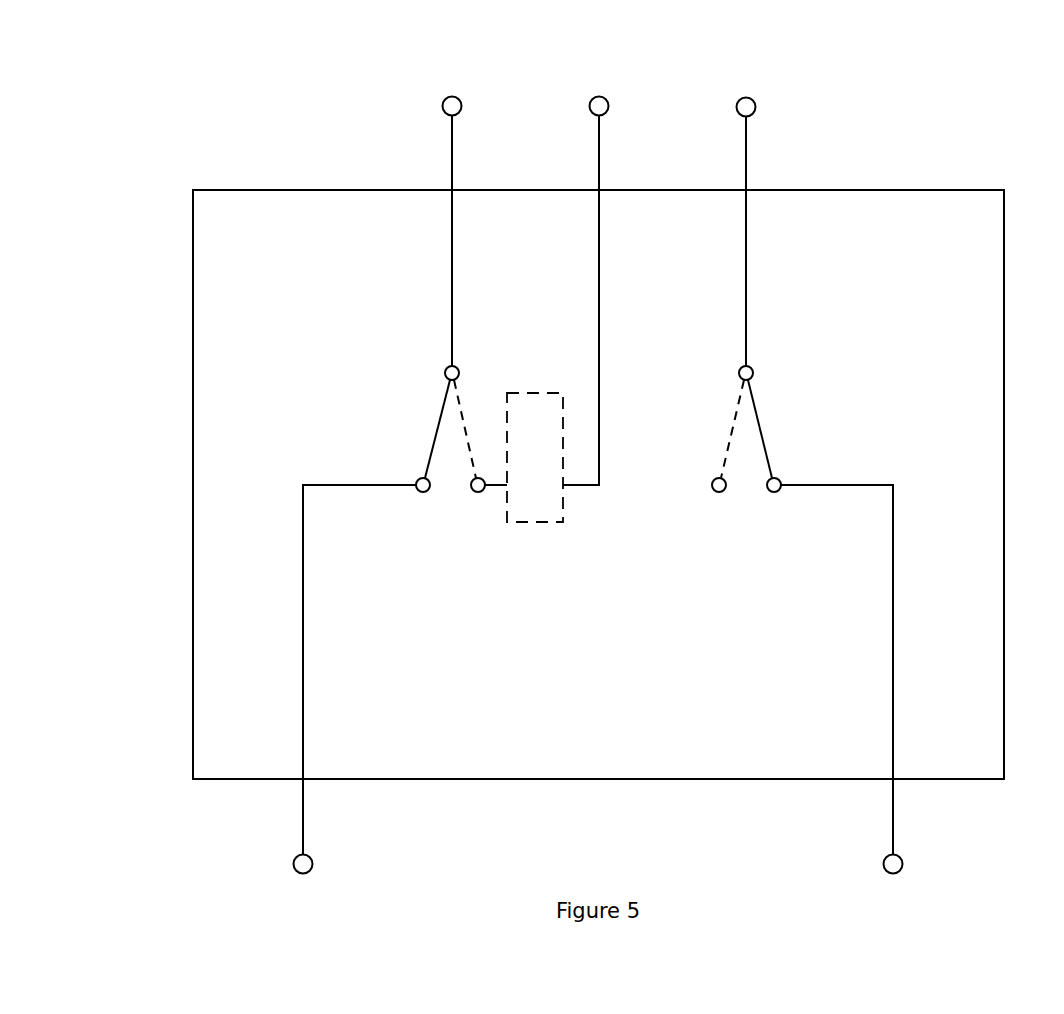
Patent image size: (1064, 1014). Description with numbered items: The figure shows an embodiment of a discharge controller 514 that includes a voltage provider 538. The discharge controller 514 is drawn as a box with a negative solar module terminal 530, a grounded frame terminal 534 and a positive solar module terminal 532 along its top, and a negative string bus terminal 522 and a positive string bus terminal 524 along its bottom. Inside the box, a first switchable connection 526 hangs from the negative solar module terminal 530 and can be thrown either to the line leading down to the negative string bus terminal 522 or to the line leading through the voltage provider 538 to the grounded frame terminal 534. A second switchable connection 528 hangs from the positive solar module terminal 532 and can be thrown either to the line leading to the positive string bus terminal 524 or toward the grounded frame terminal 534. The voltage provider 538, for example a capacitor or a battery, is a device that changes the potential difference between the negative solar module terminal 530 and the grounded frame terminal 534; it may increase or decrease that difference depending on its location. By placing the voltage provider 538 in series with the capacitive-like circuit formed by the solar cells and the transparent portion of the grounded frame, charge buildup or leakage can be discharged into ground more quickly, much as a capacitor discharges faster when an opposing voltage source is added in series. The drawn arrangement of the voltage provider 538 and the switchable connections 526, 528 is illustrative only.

The discharge controller 514 is at (215, 190).
The string bus terminal (negative) 522 is at (298, 705).
The string bus terminal (positive) 524 is at (897, 705).
The switchable connection 526 is at (453, 486).
The switchable connection 528 is at (745, 487).
The negative solar module terminal 530 is at (381, 212).
The positive solar module terminal 532 is at (818, 213).
The grounded frame terminal 534 is at (599, 247).
The voltage provider 538 is at (528, 393).